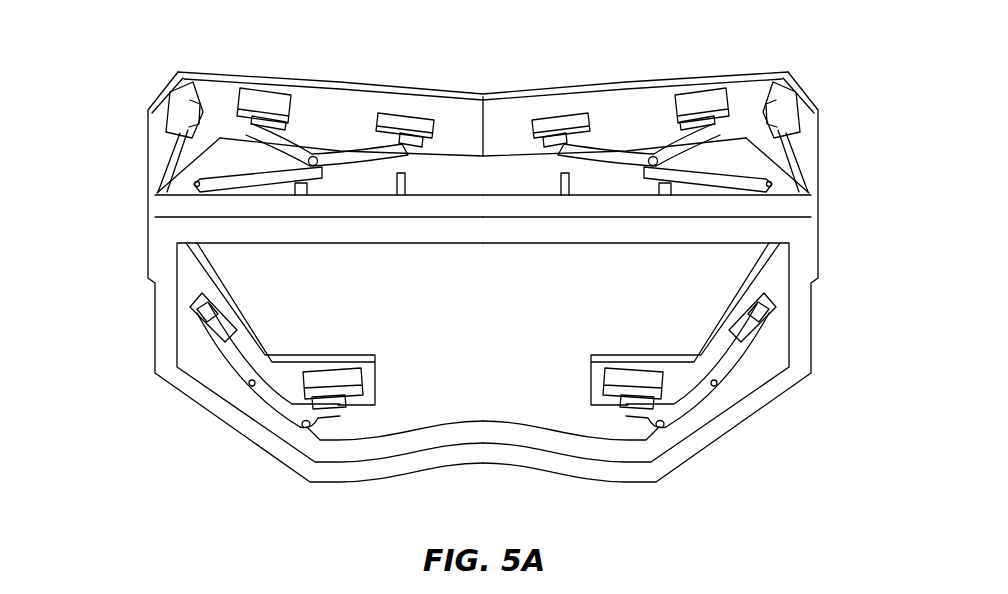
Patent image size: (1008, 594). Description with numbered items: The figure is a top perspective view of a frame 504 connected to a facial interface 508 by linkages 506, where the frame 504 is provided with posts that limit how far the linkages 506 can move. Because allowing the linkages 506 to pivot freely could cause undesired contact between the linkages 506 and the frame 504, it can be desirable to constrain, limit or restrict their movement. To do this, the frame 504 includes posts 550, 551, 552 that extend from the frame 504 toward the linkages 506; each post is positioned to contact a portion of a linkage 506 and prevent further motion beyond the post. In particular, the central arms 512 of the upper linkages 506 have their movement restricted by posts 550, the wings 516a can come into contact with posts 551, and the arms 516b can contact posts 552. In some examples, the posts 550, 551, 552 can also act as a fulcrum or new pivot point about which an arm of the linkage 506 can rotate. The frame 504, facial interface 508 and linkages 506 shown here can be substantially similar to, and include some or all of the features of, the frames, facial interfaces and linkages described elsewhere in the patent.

The frame 504 is at (256, 438).
The linkage 506 is at (200, 173).
The facial interface 508 is at (457, 103).
The central arm 512 is at (185, 180).
The wing 516a is at (289, 150).
The arm 516b is at (272, 388).
The post 550 is at (303, 196).
The post 551 is at (402, 196).
The post 552 is at (312, 427).